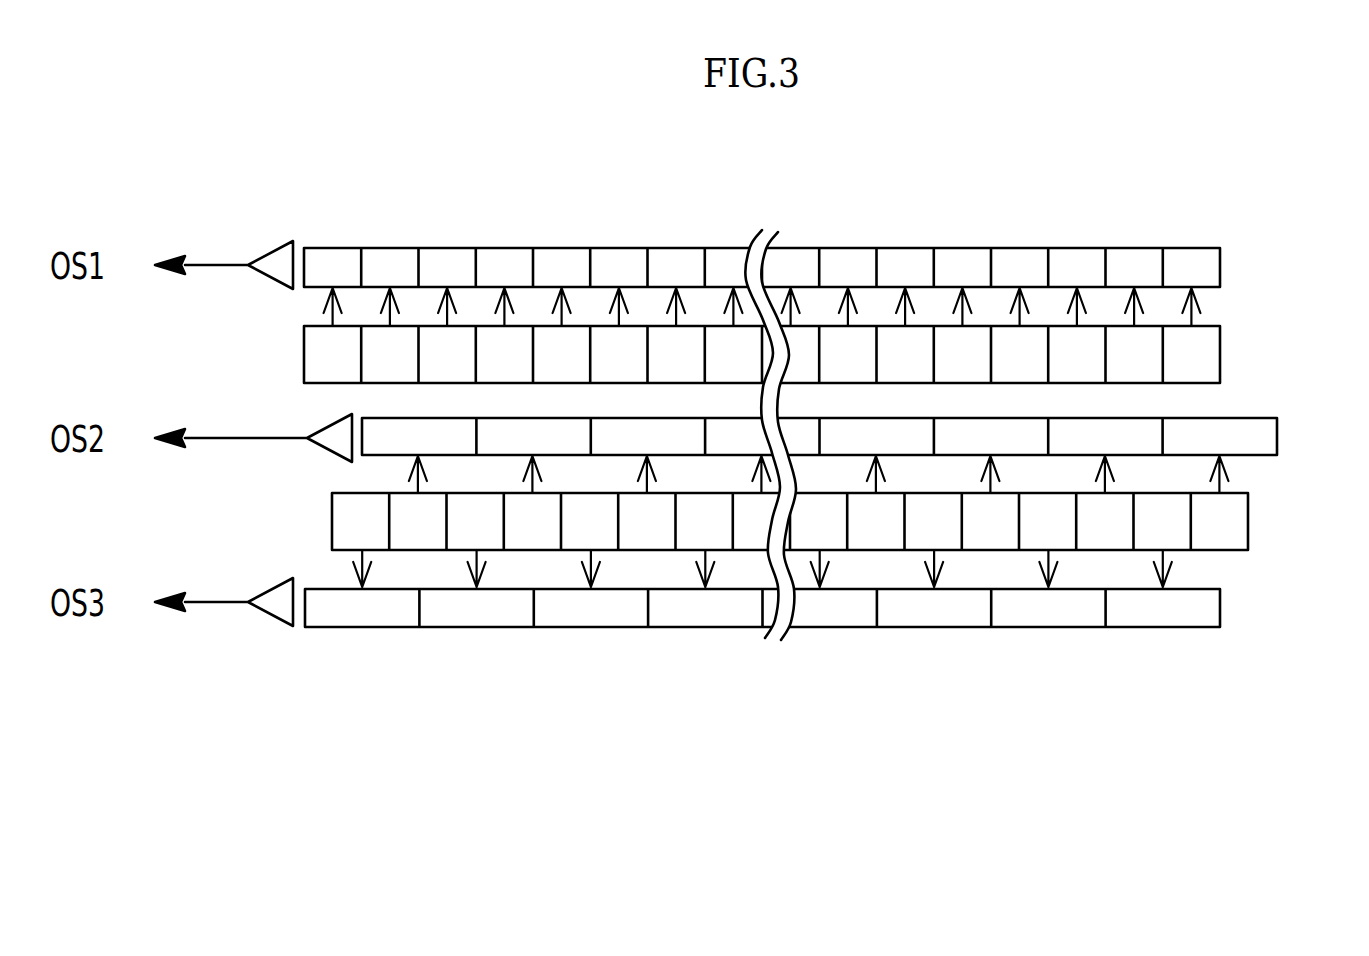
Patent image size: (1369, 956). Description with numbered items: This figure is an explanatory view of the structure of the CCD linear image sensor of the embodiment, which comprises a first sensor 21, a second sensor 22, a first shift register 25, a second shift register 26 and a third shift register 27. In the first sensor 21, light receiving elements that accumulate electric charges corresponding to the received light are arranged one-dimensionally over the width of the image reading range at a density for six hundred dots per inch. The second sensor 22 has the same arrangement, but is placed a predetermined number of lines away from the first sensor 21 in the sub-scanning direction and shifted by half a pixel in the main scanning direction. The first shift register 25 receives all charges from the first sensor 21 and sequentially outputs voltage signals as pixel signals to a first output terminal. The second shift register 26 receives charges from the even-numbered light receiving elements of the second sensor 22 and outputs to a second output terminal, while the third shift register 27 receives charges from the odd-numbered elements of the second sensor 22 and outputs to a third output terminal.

The first shift register 25 is at (1221, 269).
The first sensor 21 is at (1221, 345).
The second shift register 26 is at (1278, 437).
The second sensor 22 is at (1248, 531).
The third shift register 27 is at (1221, 607).